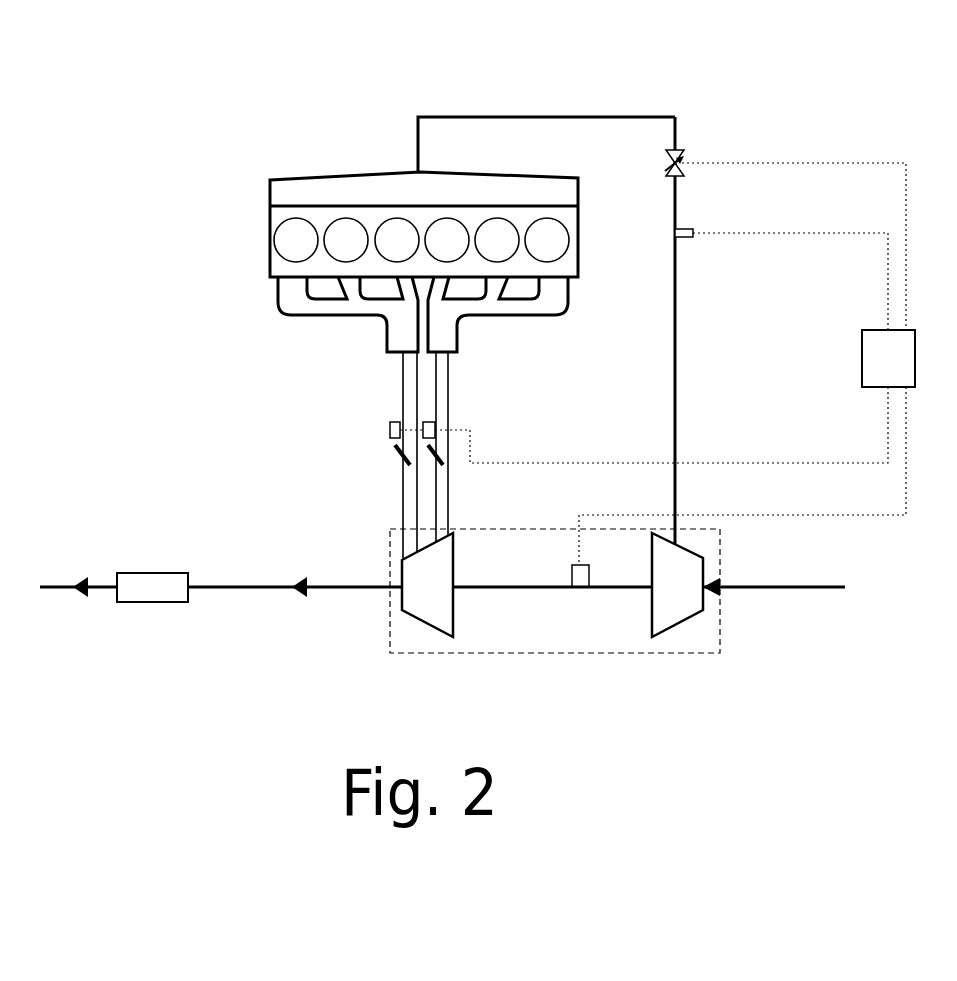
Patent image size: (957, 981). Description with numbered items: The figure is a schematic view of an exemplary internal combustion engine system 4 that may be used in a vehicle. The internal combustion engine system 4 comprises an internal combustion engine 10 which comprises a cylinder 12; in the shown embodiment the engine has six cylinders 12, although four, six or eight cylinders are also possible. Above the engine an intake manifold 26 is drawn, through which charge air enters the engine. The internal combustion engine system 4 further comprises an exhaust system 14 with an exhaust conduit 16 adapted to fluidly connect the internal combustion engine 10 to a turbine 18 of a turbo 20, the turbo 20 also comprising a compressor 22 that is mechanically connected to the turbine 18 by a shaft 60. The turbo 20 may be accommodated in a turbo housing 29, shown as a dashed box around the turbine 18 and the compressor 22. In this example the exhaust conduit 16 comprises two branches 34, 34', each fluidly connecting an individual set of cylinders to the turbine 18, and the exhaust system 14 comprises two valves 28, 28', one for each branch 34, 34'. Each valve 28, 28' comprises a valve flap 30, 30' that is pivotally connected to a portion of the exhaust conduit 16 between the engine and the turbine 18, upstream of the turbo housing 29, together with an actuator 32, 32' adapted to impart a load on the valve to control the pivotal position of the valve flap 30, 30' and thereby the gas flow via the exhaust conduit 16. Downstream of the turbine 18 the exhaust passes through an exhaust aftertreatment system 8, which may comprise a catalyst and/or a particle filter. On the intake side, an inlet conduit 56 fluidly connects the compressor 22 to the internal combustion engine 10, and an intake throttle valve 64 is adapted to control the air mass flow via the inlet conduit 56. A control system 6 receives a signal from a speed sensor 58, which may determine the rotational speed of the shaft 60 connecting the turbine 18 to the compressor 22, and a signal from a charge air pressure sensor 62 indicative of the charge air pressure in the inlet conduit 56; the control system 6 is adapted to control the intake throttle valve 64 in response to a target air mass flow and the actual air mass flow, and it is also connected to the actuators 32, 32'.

The internal combustion engine system 4 is at (742, 87).
The control system 6 is at (888, 358).
The exhaust aftertreatment system 8 is at (132, 602).
The internal combustion engine 10 is at (257, 177).
The cylinder 12 is at (547, 235).
The exhaust system 14 is at (325, 344).
The exhaust conduit 16 is at (342, 317).
The turbine 18 is at (415, 633).
The turbo 20 is at (547, 645).
The compressor 22 is at (687, 618).
The intake manifold 26 is at (357, 175).
The valve 28 is at (372, 476).
The valve 28' is at (460, 473).
The turbo housing 29 is at (508, 655).
The valve flap 30 is at (384, 494).
The valve flap 30' is at (460, 495).
The actuator 32 is at (353, 424).
The actuator 32' is at (452, 419).
The branch 34 is at (370, 456).
The branch 34' is at (465, 447).
The inlet conduit 56 is at (690, 370).
The speed sensor 58 is at (562, 557).
The shaft 60 is at (527, 592).
The charge air pressure sensor 62 is at (695, 248).
The intake throttle valve 64 is at (695, 153).